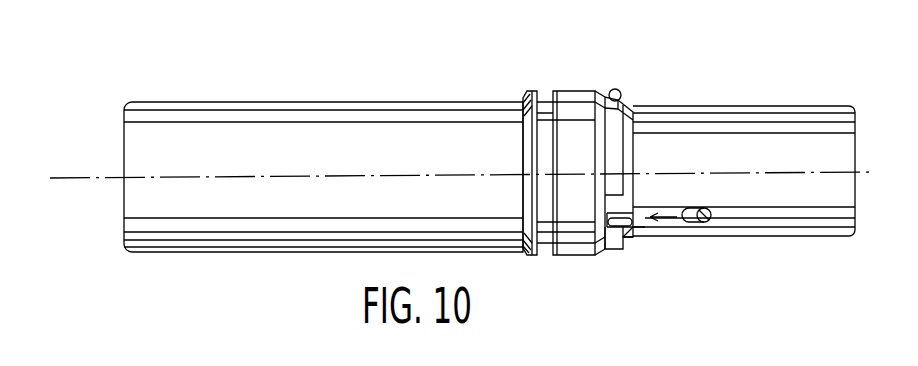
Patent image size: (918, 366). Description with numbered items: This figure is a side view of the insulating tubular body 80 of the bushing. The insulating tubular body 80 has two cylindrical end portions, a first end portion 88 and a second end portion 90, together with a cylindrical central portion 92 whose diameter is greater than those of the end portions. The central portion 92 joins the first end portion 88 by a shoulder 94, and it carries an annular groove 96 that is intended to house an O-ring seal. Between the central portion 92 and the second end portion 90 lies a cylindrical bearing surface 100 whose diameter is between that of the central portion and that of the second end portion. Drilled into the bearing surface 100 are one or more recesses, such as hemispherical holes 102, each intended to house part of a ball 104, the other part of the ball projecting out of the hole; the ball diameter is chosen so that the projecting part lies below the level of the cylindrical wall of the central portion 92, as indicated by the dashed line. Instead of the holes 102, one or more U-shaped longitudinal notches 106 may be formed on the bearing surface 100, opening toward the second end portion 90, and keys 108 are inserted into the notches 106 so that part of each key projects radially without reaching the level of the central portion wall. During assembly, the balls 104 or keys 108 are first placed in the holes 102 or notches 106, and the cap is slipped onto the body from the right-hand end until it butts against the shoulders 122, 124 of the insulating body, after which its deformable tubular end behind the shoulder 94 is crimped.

The insulating tubular body 80 is at (303, 100).
The first end portion 88 is at (173, 137).
The second end portion 90 is at (792, 147).
The central portion 92 is at (577, 97).
The shoulder 94 is at (523, 97).
The annular groove 96 is at (545, 98).
The cylindrical bearing surface 100 is at (620, 237).
The hemispherical holes 102 is at (640, 120).
The ball 104 is at (615, 93).
The U-shaped longitudinal notches 106 is at (640, 226).
The keys 108 is at (712, 218).
The shoulder 122 is at (610, 236).
The shoulder 124 is at (632, 228).